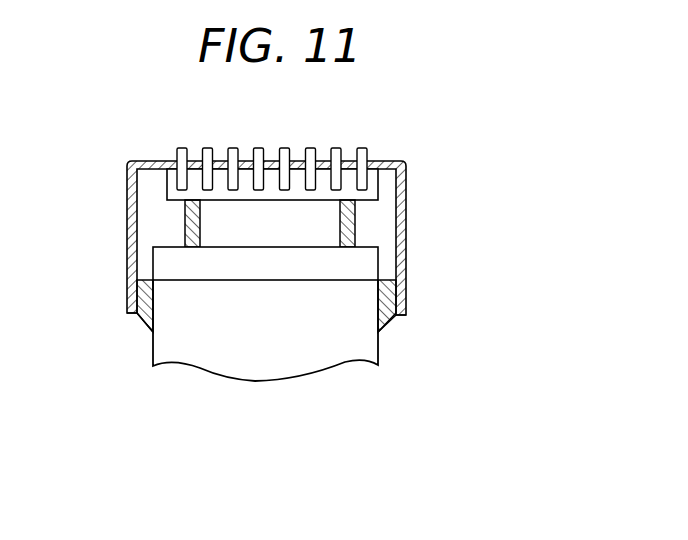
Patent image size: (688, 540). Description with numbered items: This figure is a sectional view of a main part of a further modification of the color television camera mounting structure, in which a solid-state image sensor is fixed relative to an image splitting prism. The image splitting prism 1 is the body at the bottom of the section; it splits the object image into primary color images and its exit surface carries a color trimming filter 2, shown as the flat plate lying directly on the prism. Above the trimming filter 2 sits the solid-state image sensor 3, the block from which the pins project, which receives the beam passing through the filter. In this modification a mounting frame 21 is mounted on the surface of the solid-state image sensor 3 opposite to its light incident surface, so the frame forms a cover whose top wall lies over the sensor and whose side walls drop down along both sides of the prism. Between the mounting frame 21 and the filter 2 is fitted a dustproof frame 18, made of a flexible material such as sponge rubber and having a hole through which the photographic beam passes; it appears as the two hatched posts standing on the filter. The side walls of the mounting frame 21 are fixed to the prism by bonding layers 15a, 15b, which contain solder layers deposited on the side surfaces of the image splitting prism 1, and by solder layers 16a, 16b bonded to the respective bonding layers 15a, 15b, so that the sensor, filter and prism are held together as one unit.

The image splitting prism 1 is at (260, 363).
The color trimming filter 2 is at (165, 258).
The solid-state image sensor 3 is at (372, 186).
The dustproof frame 18 is at (357, 233).
The mounting frame 21 is at (407, 167).
The bonding layer 15a is at (147, 333).
The bonding layer 15b is at (382, 333).
The solder layer 16a is at (140, 325).
The solder layer 16b is at (395, 328).